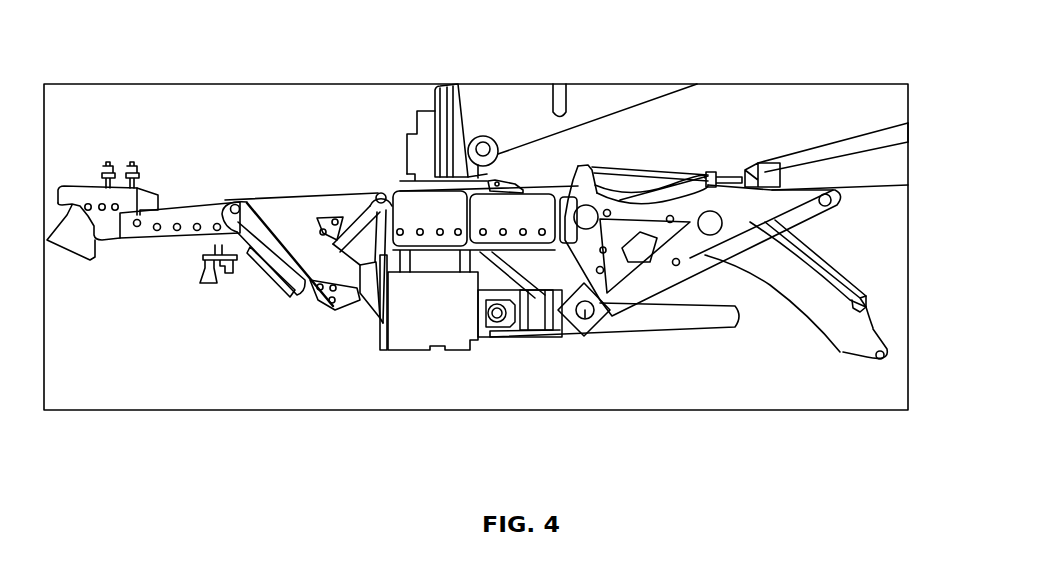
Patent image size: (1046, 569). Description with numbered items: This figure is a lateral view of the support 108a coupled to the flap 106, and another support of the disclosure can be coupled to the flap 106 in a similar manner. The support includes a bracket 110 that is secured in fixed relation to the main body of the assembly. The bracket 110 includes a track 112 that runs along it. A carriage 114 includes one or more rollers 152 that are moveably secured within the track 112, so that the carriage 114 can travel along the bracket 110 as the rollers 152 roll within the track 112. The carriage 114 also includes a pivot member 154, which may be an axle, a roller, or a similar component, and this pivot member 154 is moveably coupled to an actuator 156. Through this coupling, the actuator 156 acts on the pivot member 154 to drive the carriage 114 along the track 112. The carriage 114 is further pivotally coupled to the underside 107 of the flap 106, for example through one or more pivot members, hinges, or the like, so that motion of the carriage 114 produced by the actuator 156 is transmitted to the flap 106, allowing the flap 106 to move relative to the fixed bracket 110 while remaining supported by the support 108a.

The flap 106 is at (815, 84).
The underside of the flap 107 is at (873, 110).
The support 108a is at (388, 165).
The bracket 110 is at (847, 262).
The track 112 is at (855, 315).
The carriage 114 is at (812, 204).
The rollers 152 is at (587, 212).
The pivot member 154 is at (585, 312).
The actuator 156 is at (452, 333).